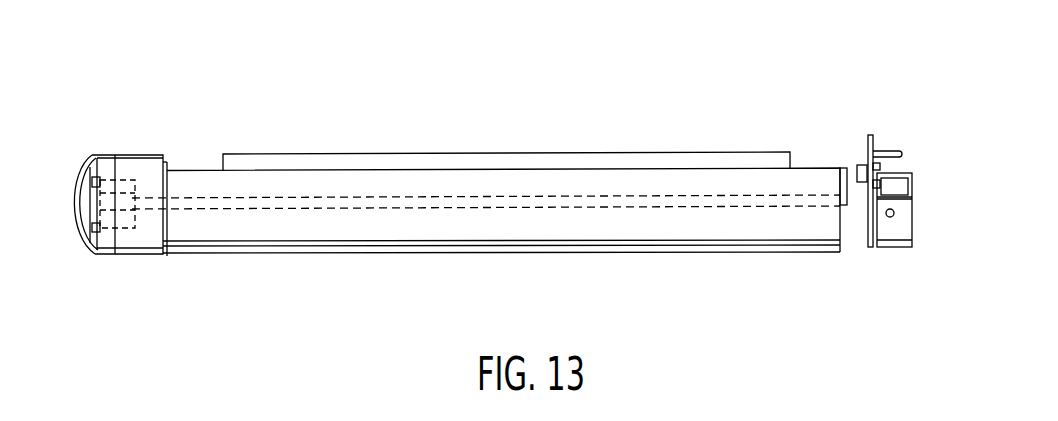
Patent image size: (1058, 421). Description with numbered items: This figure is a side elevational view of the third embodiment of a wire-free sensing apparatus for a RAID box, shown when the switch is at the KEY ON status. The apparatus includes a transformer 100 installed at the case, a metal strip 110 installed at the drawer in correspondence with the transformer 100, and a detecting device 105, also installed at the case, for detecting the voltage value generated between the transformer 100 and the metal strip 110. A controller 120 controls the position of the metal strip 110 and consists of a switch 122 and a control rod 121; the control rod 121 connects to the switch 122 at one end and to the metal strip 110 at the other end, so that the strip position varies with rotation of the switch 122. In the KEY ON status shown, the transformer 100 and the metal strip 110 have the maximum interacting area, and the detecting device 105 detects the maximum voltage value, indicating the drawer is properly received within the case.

The transformer 100 is at (853, 165).
The detecting device 105 is at (870, 135).
The metal strip 110 is at (842, 166).
The controller 120 is at (407, 80).
The control rod 121 is at (440, 196).
The switch 122 is at (132, 182).